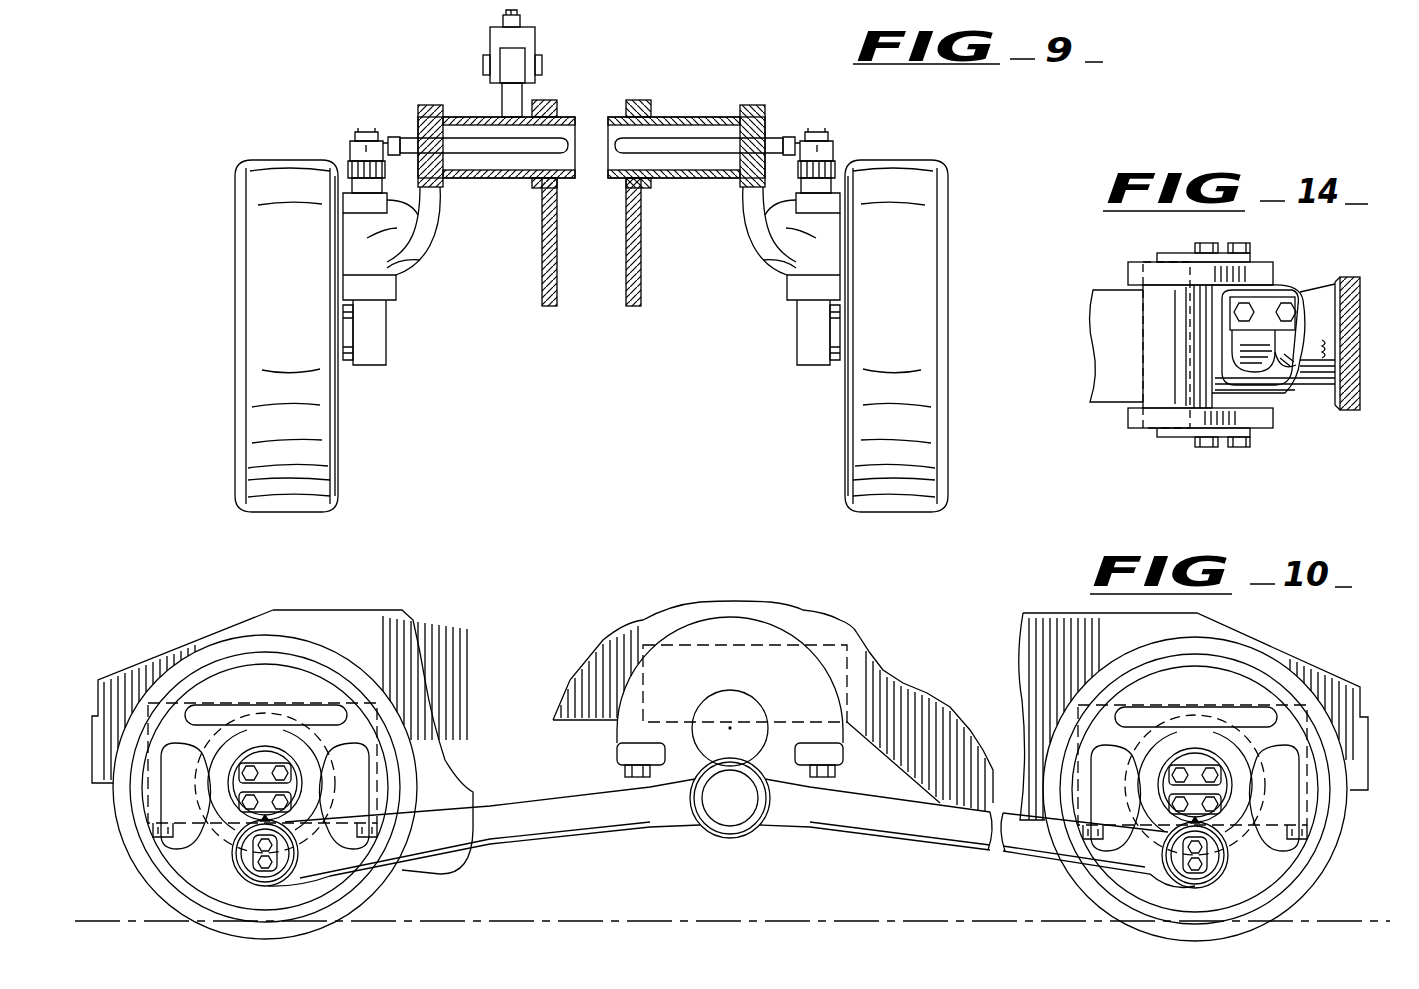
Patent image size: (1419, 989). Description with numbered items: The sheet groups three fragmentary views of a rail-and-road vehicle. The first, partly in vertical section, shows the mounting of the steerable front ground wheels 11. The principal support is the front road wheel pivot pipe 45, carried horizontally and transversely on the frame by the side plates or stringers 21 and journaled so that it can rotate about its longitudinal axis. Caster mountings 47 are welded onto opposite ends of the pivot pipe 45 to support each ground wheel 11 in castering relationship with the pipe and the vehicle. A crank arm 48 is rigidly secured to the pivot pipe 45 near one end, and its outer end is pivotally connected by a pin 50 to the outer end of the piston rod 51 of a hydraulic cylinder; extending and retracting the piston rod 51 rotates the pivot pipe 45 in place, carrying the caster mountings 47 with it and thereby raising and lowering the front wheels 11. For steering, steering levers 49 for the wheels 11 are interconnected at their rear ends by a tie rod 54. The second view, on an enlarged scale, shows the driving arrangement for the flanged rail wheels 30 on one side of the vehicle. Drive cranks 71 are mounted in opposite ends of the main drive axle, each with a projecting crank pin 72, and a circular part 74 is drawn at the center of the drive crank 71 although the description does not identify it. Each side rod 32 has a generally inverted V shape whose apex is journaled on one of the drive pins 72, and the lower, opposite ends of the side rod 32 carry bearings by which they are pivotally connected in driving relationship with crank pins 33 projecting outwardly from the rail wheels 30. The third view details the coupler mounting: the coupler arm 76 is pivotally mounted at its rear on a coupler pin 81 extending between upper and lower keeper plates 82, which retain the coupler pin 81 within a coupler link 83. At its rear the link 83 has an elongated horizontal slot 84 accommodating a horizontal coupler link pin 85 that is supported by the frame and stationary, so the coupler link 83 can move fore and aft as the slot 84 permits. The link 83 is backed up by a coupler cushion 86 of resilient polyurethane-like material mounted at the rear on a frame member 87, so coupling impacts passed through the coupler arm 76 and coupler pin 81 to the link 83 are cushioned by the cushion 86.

In FIG. 9, the front ground wheel 11 is at (339, 437).
In FIG. 9, the side plate 21 is at (626, 282).
In FIG. 10, the side plate 21 is at (1022, 612).
In FIG. 9, the front road wheel pivot pipe 45 is at (677, 116).
In FIG. 9, the caster mounting 47 is at (431, 232).
In FIG. 9, the crank arm 48 is at (525, 100).
In FIG. 9, the steering lever 49 is at (350, 165).
In FIG. 9, the pin 50 is at (540, 65).
In FIG. 9, the piston rod 51 is at (502, 18).
In FIG. 9, the tie rod 54 is at (712, 150).
In FIG. 10, the flanged rail wheel 30 is at (116, 831).
In FIG. 10, the side rod 32 is at (603, 833).
In FIG. 10, the crank pin 33 is at (256, 857).
In FIG. 10, the drive crank 71 is at (772, 627).
In FIG. 10, the crank pin 72 is at (738, 815).
In FIG. 10, the bearing 74 is at (712, 727).
In FIG. 14, the coupler arm 76 is at (1092, 368).
In FIG. 14, the coupler pin 81 is at (1140, 298).
In FIG. 14, the keeper plate 82 is at (1180, 437).
In FIG. 14, the coupler link 83 is at (1130, 262).
In FIG. 14, the elongated horizontal slot 84 is at (1290, 358).
In FIG. 14, the coupler link pin 85 is at (1255, 360).
In FIG. 14, the coupler cushion 86 is at (1327, 300).
In FIG. 14, the frame member 87 is at (1362, 333).